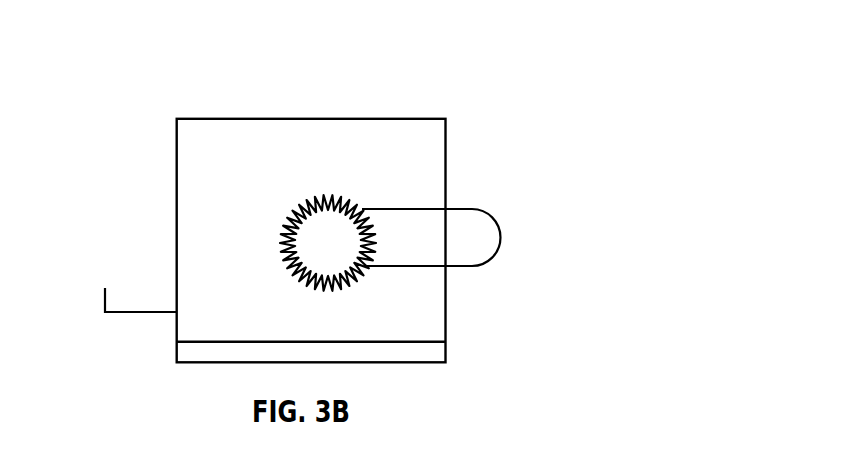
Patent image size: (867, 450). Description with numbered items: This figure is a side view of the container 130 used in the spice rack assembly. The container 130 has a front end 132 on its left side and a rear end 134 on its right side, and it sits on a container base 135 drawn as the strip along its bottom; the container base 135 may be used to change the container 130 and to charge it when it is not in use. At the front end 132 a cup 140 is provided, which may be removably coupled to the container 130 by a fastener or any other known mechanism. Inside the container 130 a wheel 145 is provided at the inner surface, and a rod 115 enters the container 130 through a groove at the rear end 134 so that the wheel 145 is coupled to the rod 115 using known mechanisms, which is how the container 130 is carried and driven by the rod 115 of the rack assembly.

The container 130 is at (347, 140).
The container base 135 is at (446, 353).
The wheel 145 is at (288, 215).
The rod 115 is at (427, 232).
The rear end 134 is at (498, 188).
The front end 132 is at (122, 210).
The cup 140 is at (112, 315).